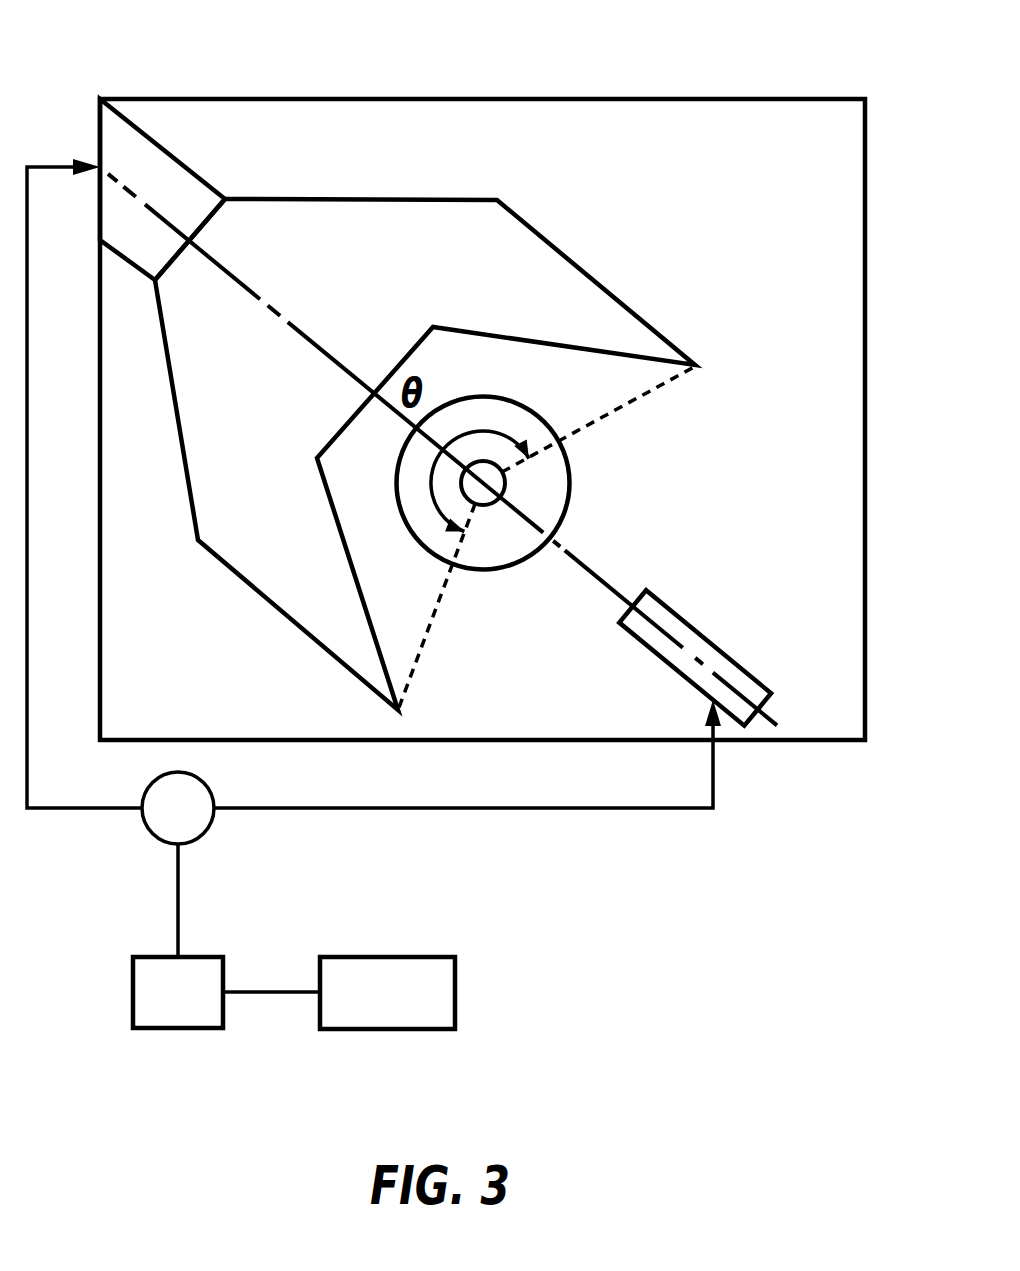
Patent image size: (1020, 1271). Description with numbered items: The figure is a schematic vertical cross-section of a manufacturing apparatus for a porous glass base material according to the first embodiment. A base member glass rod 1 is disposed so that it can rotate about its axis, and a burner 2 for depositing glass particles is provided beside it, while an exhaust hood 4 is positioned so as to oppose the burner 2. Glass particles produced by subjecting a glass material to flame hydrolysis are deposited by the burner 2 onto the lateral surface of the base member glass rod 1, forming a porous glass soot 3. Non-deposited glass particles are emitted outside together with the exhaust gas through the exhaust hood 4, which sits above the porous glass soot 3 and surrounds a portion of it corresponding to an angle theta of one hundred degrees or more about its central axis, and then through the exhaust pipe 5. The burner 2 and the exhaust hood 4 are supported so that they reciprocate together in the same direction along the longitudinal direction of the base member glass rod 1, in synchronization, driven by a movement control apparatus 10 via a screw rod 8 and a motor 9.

The base member glass rod 1 is at (505, 480).
The burner 2 is at (717, 653).
The porous glass soot 3 is at (490, 550).
The exhaust hood 4 is at (297, 267).
The exhaust pipe 5 is at (157, 172).
The screw rod 8 is at (82, 808).
The motor 9 is at (133, 990).
The movement control apparatus 10 is at (455, 990).